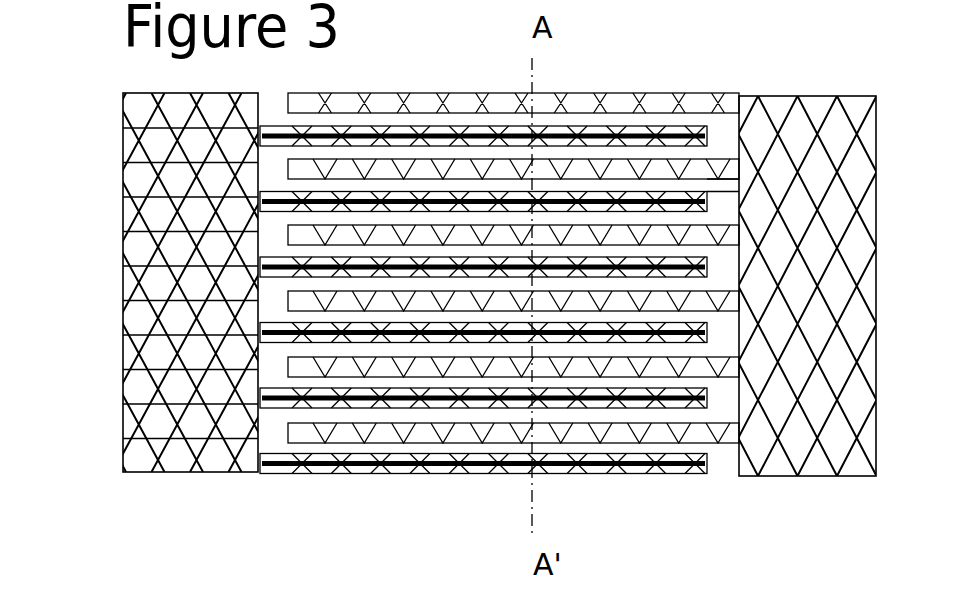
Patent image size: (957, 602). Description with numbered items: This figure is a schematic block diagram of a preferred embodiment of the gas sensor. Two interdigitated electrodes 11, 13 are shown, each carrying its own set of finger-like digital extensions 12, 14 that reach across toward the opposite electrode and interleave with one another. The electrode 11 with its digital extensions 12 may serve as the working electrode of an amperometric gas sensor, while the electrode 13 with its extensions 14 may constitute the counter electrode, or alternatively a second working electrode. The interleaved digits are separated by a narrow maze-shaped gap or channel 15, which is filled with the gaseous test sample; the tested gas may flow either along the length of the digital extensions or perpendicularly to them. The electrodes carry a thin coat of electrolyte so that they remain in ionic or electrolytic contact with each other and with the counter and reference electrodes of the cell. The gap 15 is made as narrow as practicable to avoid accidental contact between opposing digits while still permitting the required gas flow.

The electrode 11 is at (163, 473).
The digital extensions 12 is at (417, 405).
The electrode 13 is at (797, 477).
The digital extensions 14 is at (372, 443).
The gap 15 is at (728, 186).